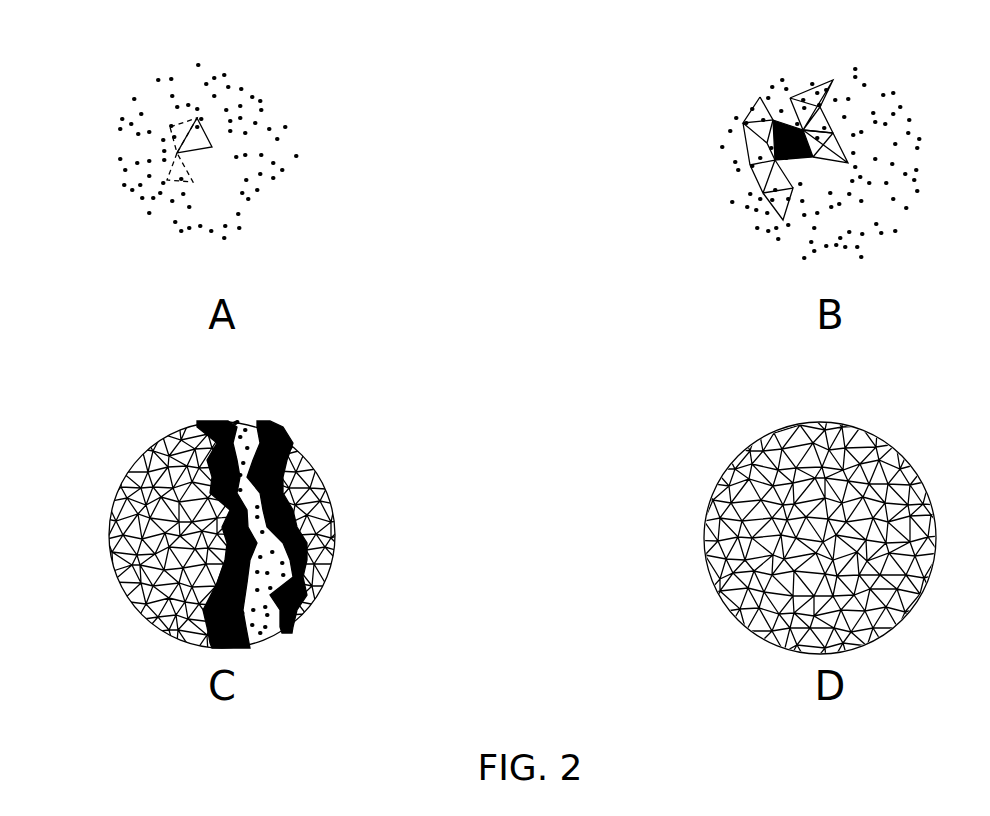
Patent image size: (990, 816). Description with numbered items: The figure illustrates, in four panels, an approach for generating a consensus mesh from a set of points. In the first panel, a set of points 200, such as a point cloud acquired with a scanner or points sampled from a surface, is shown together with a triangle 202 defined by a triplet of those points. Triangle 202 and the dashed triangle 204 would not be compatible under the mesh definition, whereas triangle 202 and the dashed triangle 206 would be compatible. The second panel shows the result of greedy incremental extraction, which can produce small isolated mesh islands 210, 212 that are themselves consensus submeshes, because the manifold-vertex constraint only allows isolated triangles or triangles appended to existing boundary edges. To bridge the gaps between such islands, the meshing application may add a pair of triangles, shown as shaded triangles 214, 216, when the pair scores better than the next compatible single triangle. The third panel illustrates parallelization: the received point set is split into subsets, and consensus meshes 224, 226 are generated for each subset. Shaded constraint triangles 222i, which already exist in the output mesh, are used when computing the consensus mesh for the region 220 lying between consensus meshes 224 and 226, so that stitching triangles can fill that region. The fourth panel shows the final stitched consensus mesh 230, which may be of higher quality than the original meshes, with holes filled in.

The set of points 200 is at (292, 133).
The triangle 202 is at (197, 137).
The triangle 204 is at (175, 168).
The triangle 206 is at (181, 126).
The mesh island 210 is at (822, 75).
The mesh island 212 is at (767, 143).
The shaded triangle 214 is at (782, 118).
The shaded triangle 216 is at (803, 130).
The region 220 is at (243, 421).
The shaded triangles 222i is at (207, 422).
The consensus mesh 224 is at (120, 488).
The consensus mesh 226 is at (327, 486).
The complete mesh 230 is at (880, 458).